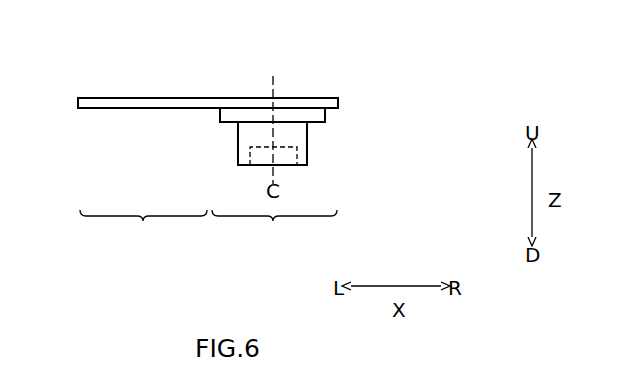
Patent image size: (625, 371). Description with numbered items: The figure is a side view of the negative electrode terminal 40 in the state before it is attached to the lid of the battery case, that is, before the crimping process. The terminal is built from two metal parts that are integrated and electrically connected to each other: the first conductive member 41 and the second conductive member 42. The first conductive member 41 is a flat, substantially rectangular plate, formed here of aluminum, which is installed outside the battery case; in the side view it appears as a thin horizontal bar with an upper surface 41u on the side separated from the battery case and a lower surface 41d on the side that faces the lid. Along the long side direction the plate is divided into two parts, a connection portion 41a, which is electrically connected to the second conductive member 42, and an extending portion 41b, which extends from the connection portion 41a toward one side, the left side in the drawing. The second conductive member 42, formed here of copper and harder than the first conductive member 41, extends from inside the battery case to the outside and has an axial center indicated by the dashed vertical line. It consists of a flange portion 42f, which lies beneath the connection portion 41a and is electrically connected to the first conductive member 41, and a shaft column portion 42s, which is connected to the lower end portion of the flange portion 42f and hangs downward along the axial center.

The negative electrode terminal 40 is at (312, 66).
The first conductive member 41 is at (101, 92).
The upper surface 41u is at (127, 97).
The lower surface 41d is at (108, 109).
The connection portion 41a is at (274, 232).
The extending portion 41b is at (143, 232).
The second conductive member 42 is at (323, 135).
The flange portion 42f is at (219, 115).
The shaft column portion 42s is at (242, 139).